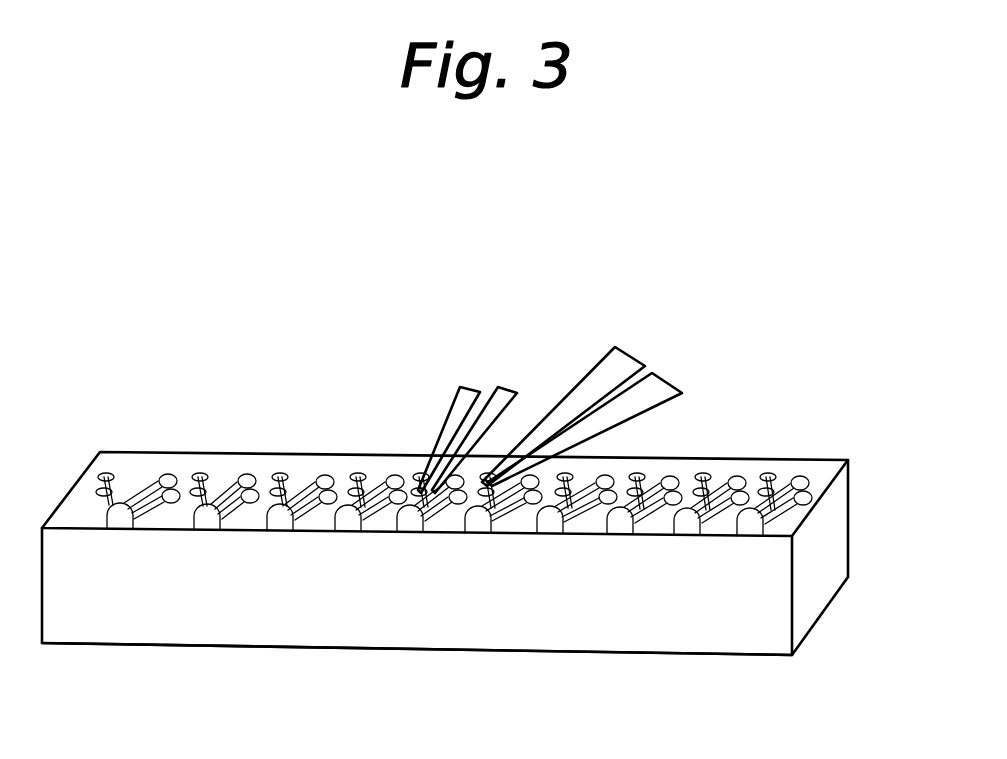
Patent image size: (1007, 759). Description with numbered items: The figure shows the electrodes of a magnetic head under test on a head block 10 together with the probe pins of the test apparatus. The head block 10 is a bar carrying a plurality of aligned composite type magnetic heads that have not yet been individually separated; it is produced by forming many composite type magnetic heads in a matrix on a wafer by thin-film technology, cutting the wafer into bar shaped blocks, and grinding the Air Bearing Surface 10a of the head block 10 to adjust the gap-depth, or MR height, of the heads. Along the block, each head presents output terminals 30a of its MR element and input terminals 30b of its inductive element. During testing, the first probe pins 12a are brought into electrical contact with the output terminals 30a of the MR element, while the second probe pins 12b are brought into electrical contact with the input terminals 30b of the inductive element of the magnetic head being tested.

The head block 10 is at (820, 538).
The Air Bearing Surface (ABS) 10a is at (402, 625).
The first probe pins 12a is at (667, 375).
The second probe pins 12b is at (465, 383).
The output terminals 30a is at (322, 480).
The input terminals 30b is at (276, 480).